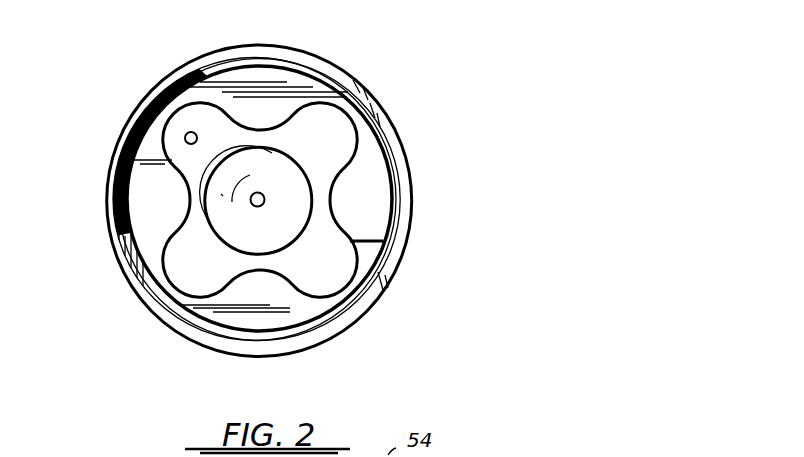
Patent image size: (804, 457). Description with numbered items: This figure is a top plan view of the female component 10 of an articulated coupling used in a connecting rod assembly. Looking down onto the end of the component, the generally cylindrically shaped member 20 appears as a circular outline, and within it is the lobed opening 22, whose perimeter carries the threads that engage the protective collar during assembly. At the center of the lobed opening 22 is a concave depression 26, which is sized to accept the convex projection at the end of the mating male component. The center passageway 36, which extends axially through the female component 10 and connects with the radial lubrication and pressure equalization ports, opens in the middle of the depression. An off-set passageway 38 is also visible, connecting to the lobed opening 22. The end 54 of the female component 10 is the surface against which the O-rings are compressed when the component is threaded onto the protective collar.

The female component 10 is at (372, 201).
The generally cylindrically shaped member 20 is at (413, 185).
The lobed opening 22 is at (346, 148).
The concave depression 26 is at (263, 256).
The center passageway 36 is at (263, 194).
The off-set passageway 38 is at (205, 135).
The end of female component 54 is at (152, 238).